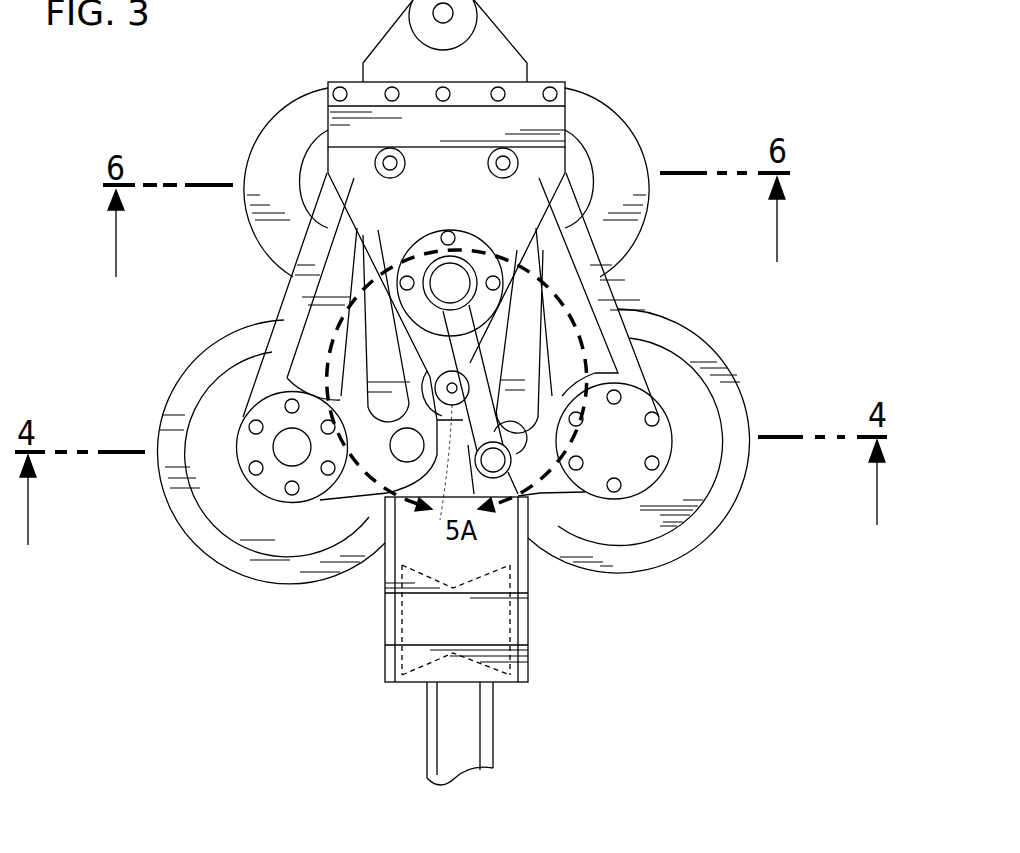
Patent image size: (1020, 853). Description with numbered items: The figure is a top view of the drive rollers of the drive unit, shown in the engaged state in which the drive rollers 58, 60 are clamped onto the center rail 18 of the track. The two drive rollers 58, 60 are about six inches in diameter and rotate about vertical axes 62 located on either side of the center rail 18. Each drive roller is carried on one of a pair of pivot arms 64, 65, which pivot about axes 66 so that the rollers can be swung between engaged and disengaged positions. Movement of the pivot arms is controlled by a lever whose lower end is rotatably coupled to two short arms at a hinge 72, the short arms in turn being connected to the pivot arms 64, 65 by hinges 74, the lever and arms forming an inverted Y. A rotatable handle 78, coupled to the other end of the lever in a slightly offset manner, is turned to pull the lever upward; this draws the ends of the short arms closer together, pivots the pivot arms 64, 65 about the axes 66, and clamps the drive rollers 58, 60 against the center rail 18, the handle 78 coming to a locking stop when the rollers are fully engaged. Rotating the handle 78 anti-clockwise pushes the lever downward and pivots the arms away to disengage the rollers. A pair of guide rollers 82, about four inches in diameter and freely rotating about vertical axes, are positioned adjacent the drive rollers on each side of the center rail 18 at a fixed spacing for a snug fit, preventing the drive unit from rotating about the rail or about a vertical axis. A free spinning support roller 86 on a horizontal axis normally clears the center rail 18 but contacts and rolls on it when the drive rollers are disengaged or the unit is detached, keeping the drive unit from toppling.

The center rail 18 is at (467, 742).
The drive roller 58 is at (735, 410).
The drive roller 60 is at (192, 370).
The vertical axis 62 is at (291, 452).
The pivot arm 64 is at (598, 277).
The pivot arm 65 is at (293, 305).
The pivot axis 66 is at (368, 124).
The hinge 72 is at (436, 456).
The hinge 74 is at (406, 447).
The rotatable handle 78 is at (480, 390).
The guide roller 82 is at (281, 137).
The support roller 86 is at (492, 623).